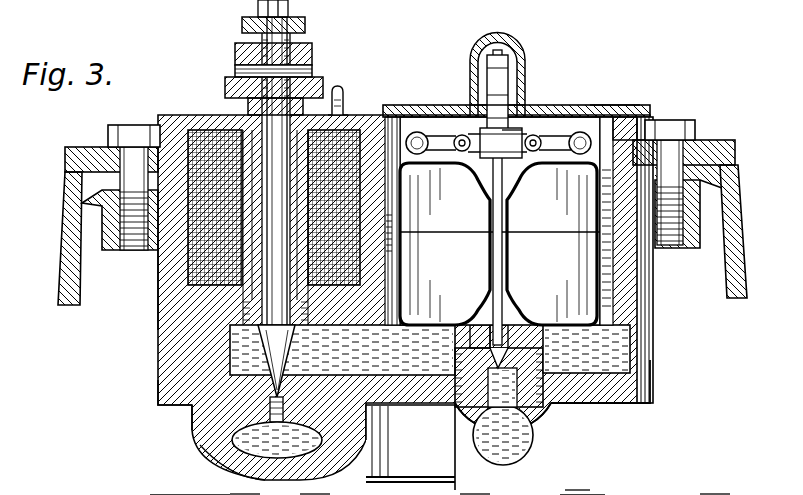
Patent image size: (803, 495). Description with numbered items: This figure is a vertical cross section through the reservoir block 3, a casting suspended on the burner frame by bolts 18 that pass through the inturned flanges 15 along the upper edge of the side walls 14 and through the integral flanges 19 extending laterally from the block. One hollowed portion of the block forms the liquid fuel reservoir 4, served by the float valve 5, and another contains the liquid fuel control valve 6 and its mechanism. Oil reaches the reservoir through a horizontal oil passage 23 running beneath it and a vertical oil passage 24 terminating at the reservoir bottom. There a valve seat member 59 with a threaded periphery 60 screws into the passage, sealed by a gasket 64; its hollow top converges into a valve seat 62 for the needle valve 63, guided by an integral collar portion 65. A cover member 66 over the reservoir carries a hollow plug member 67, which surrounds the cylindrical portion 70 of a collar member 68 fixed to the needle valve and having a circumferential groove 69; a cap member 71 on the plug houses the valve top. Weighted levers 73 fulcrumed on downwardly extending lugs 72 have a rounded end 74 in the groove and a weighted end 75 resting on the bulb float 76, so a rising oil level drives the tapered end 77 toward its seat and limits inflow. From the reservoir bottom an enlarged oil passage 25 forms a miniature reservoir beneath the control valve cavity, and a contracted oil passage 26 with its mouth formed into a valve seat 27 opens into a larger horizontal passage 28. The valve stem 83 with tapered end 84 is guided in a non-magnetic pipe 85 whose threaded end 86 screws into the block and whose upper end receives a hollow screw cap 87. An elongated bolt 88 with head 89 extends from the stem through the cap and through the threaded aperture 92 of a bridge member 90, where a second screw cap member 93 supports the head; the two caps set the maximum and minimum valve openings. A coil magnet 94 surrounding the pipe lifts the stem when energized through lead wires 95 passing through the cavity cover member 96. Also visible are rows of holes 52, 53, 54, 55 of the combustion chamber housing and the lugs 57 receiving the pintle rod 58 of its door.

The reservoir block 3 is at (176, 378).
The liquid fuel reservoir 4 is at (640, 365).
The float valve 5 is at (600, 327).
The liquid fuel control valve 6 is at (235, 348).
The side walls 14 is at (70, 258).
The inturned flanges 15 is at (100, 160).
The bolts 18 is at (128, 136).
The integral flanges 19 is at (110, 218).
The horizontal oil passage 23 is at (525, 440).
The vertical oil passage 24 is at (525, 412).
The enlarged oil passage 25 is at (176, 360).
The contracted oil passage 26 is at (255, 438).
The valve seat 27 is at (205, 433).
The horizontal passage 28 is at (220, 467).
The row of holes 52 is at (239, 487).
The row of holes 53 is at (571, 481).
The row of holes 54 is at (310, 487).
The row of holes 55 is at (475, 487).
The lugs 57 is at (150, 494).
The pintle rod 58 is at (715, 487).
The valve seat member 59 is at (628, 405).
The threaded periphery 60 is at (385, 411).
The valve seat 62 is at (647, 402).
The needle valve 63 is at (607, 275).
The gasket 64 is at (655, 385).
The collar portion 65 is at (597, 338).
The cover member 66 is at (655, 105).
The hollow plug member 67 is at (520, 95).
The collar member 68 is at (466, 105).
The circumferential groove 69 is at (452, 115).
The cylindrical portion 70 is at (560, 50).
The cap member 71 is at (520, 46).
The lugs 72 is at (546, 132).
The weighted levers 73 is at (600, 105).
The rounded end 74 is at (555, 140).
The weighted end 75 is at (612, 102).
The bulb float 76 is at (636, 125).
The tapered end 77 is at (652, 345).
The valve stem 83 is at (247, 315).
The tapered end 84 is at (168, 408).
The pipe 85 is at (205, 275).
The threaded end 86 is at (245, 300).
The hollow screw cap 87 is at (243, 85).
The elongated bolt 88 is at (272, 103).
The head 89 is at (290, 8).
The bridge member 90 is at (250, 57).
The threaded aperture 92 is at (245, 47).
The second screw cap member 93 is at (305, 25).
The coil magnet 94 is at (190, 250).
The lead wires 95 is at (345, 112).
The cover member 96 is at (325, 115).